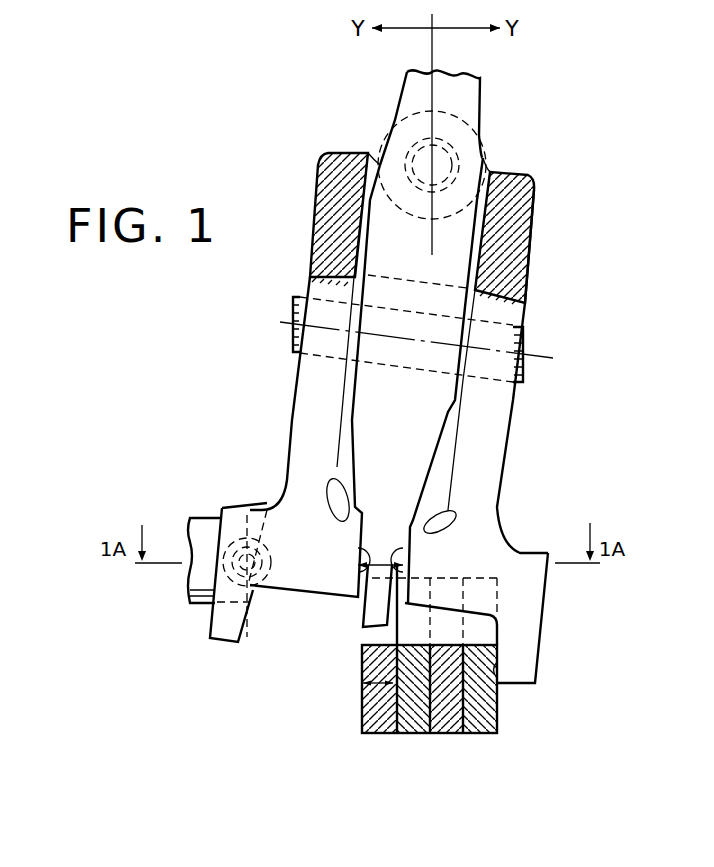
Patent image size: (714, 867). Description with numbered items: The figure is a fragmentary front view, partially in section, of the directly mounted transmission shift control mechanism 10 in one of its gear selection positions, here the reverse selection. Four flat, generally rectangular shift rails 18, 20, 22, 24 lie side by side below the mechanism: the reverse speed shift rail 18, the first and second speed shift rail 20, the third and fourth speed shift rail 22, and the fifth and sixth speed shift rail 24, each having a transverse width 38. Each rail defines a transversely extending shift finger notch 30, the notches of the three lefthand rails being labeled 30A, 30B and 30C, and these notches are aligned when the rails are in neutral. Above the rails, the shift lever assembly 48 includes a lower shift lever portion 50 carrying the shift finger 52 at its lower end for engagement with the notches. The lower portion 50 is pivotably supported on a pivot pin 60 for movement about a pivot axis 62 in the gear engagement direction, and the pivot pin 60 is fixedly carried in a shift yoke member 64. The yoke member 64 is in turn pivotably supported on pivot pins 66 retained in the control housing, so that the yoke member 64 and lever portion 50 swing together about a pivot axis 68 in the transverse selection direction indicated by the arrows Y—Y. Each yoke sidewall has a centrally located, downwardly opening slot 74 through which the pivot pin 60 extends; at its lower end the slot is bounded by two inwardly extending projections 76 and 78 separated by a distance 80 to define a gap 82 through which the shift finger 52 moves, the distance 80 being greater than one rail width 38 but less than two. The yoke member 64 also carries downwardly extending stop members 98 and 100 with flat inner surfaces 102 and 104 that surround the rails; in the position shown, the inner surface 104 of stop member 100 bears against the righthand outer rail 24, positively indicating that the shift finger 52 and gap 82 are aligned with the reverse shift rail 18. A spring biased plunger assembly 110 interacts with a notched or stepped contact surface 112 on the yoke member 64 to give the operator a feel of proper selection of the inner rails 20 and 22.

The transmission shift control mechanism 10 is at (543, 102).
The reverse speed shift rail 18 is at (370, 713).
The first and second speed shift rail 20 is at (413, 723).
The third and fourth speed shift rail 22 is at (443, 720).
The fifth and sixth speed shift rail 24 is at (493, 712).
The shift finger notch 30 is at (487, 627).
The shift finger notch of shift rail 18 30A is at (407, 650).
The shift finger notch of shift rail 20 30B is at (405, 648).
The shift finger notch of shift rail 22 30C is at (453, 635).
The width 38 is at (370, 690).
The shift lever assembly 48 is at (382, 108).
The lower shift lever portion 50 is at (383, 412).
The shift finger 52 is at (373, 603).
The pivot pin 60 is at (300, 312).
The pivot axis 62 is at (540, 356).
The shift yoke member 64 is at (532, 245).
The pivot pins 66 is at (445, 160).
The pivot axis 68 is at (432, 165).
The downwardly opening slot 74 is at (453, 422).
The inwardly extending projection 76 is at (430, 525).
The inwardly extending projection 78 is at (337, 487).
The distance 80 is at (380, 560).
The gap 82 is at (350, 588).
The stop member 98 is at (207, 618).
The stop member 100 is at (543, 660).
The inner surface 102 is at (253, 630).
The inner surface 104 is at (493, 677).
The spring biased plunger assembly 110 is at (203, 512).
The notched or stepped contact surface 112 is at (250, 502).